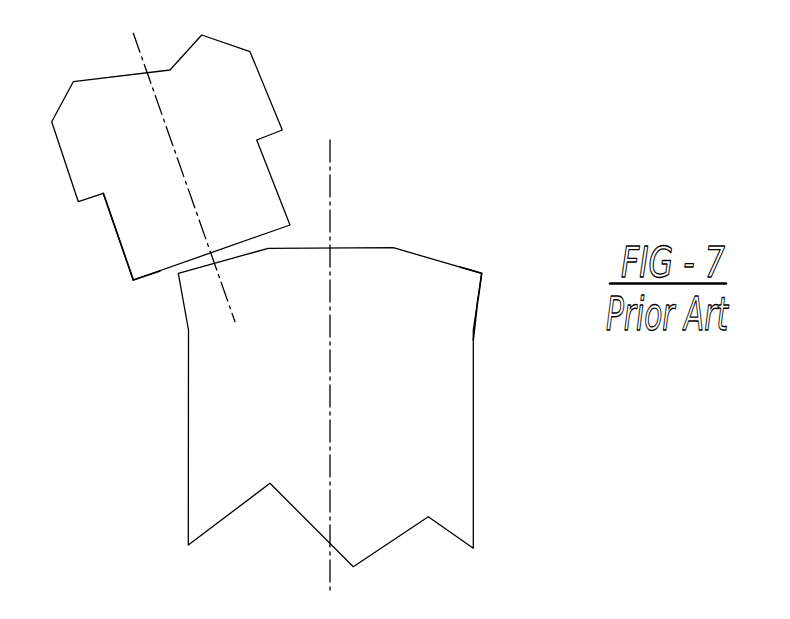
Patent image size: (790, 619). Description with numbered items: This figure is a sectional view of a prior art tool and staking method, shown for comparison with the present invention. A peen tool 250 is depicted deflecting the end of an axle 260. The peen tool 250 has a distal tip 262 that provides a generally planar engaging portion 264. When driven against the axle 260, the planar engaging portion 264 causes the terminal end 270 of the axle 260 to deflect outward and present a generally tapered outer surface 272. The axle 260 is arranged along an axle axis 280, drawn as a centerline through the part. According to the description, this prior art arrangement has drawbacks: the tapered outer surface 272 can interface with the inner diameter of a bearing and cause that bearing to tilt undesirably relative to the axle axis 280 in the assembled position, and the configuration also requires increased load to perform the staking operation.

The peen tool 250 is at (227, 105).
The axle 260 is at (214, 407).
The distal tip 262 is at (140, 233).
The planar engaging portion 264 is at (148, 283).
The terminal end 270 is at (495, 273).
The tapered outer surface 272 is at (490, 308).
The axle axis 280 is at (331, 171).